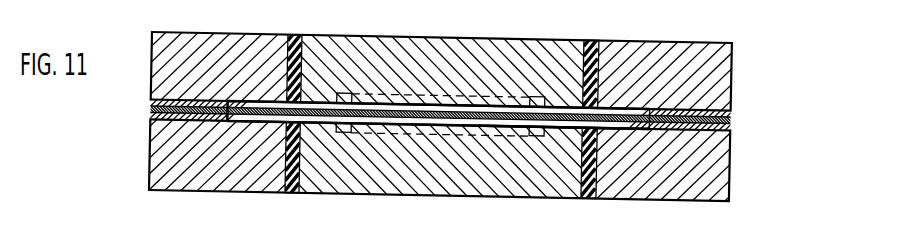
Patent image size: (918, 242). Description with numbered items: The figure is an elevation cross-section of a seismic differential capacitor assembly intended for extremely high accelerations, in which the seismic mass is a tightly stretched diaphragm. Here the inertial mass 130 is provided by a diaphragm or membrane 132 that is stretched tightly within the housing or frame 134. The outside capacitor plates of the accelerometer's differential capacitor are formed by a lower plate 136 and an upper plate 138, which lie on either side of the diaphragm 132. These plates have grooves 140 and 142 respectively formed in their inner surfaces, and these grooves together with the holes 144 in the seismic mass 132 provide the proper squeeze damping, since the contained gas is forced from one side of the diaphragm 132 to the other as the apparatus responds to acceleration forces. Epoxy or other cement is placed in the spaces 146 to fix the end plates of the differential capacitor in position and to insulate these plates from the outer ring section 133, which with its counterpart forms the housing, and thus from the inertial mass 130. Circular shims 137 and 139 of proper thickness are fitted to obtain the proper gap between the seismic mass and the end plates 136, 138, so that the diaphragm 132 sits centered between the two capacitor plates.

The inertial mass 130 is at (448, 105).
The diaphragm 132 is at (627, 120).
The outer ring section 133 is at (734, 171).
The housing 134 is at (734, 48).
The lower plate 136 is at (438, 195).
The circular shim 137 is at (734, 126).
The upper plate 138 is at (415, 45).
The circular shim 139 is at (734, 113).
The groove 140 is at (342, 130).
The groove 142 is at (346, 92).
The holes 144 is at (477, 113).
The spaces 146 is at (590, 42).